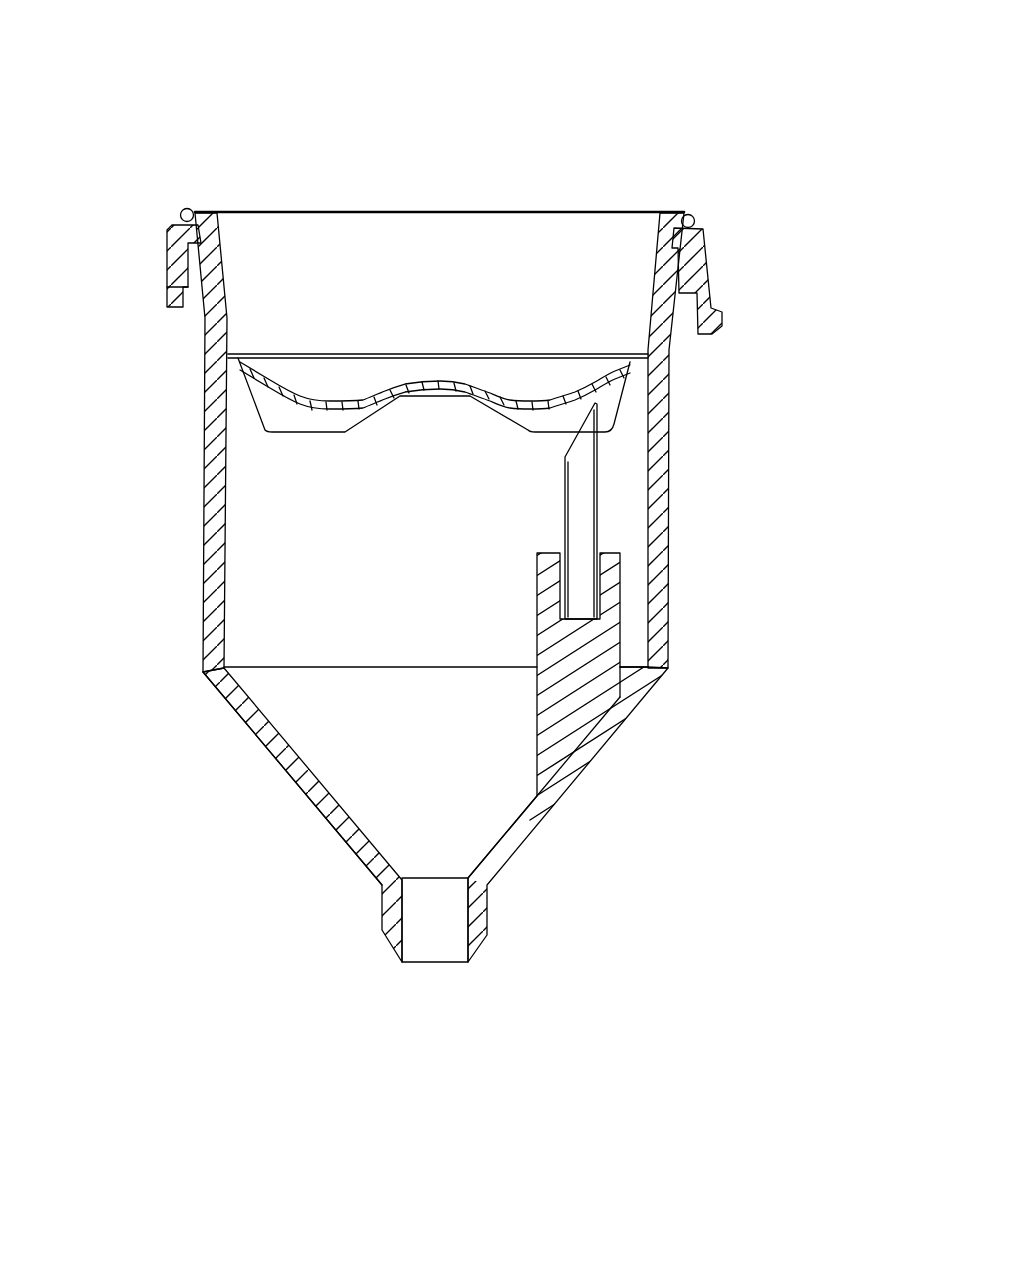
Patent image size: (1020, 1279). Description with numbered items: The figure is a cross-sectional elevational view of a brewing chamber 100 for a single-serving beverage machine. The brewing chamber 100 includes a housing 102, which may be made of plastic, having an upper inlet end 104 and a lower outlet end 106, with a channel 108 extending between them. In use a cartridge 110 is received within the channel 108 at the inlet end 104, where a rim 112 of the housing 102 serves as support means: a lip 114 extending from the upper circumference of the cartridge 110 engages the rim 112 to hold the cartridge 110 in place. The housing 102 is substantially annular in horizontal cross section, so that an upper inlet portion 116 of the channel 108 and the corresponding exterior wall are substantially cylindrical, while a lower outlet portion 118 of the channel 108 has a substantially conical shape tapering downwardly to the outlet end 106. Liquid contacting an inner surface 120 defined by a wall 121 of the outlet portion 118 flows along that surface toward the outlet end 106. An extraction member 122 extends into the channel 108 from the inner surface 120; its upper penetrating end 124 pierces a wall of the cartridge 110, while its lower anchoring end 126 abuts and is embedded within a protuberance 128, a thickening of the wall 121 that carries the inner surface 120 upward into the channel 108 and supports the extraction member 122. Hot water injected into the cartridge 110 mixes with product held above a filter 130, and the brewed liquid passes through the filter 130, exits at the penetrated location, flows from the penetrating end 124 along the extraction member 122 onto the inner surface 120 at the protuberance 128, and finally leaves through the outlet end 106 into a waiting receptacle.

The brewing chamber 100 is at (125, 135).
The housing 102 is at (313, 800).
The inlet end 104 is at (178, 216).
The outlet end 106 is at (420, 964).
The channel 108 is at (288, 603).
The cartridge 110 is at (313, 210).
The rim 112 is at (698, 229).
The lip 114 is at (678, 213).
The inlet portion 116 is at (117, 255).
The outlet portion 118 is at (748, 668).
The inner surface 120 is at (278, 722).
The wall 121 is at (290, 762).
The extraction member 122 is at (597, 478).
The penetrating end 124 is at (600, 408).
The anchoring end 126 is at (600, 613).
The protuberance 128 is at (597, 657).
The filter 130 is at (530, 397).